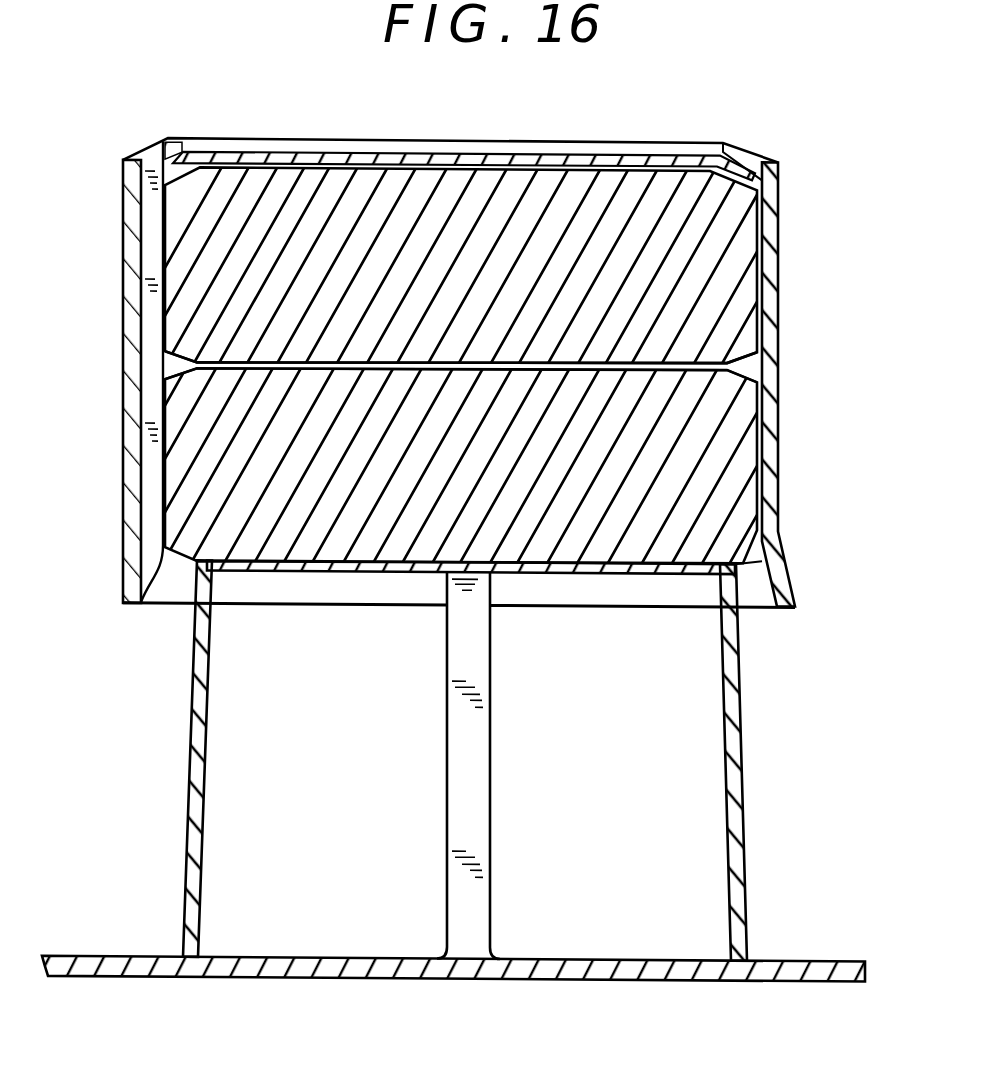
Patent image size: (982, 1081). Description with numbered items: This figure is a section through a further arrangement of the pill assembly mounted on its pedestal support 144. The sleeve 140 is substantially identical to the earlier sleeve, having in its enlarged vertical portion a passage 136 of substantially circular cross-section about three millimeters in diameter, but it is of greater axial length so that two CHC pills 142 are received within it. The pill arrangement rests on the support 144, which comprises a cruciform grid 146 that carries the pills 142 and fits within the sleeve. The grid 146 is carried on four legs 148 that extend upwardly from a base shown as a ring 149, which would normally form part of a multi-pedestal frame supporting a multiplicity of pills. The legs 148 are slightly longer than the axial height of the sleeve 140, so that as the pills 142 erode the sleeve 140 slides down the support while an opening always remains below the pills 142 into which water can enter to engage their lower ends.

The passage 136 is at (146, 456).
The sleeve 140 is at (760, 355).
The CHC pills 142 is at (745, 251).
The pedestal support 144 is at (790, 685).
The cruciform grid 146 is at (360, 572).
The legs 148 is at (745, 811).
The ring 149 is at (792, 955).